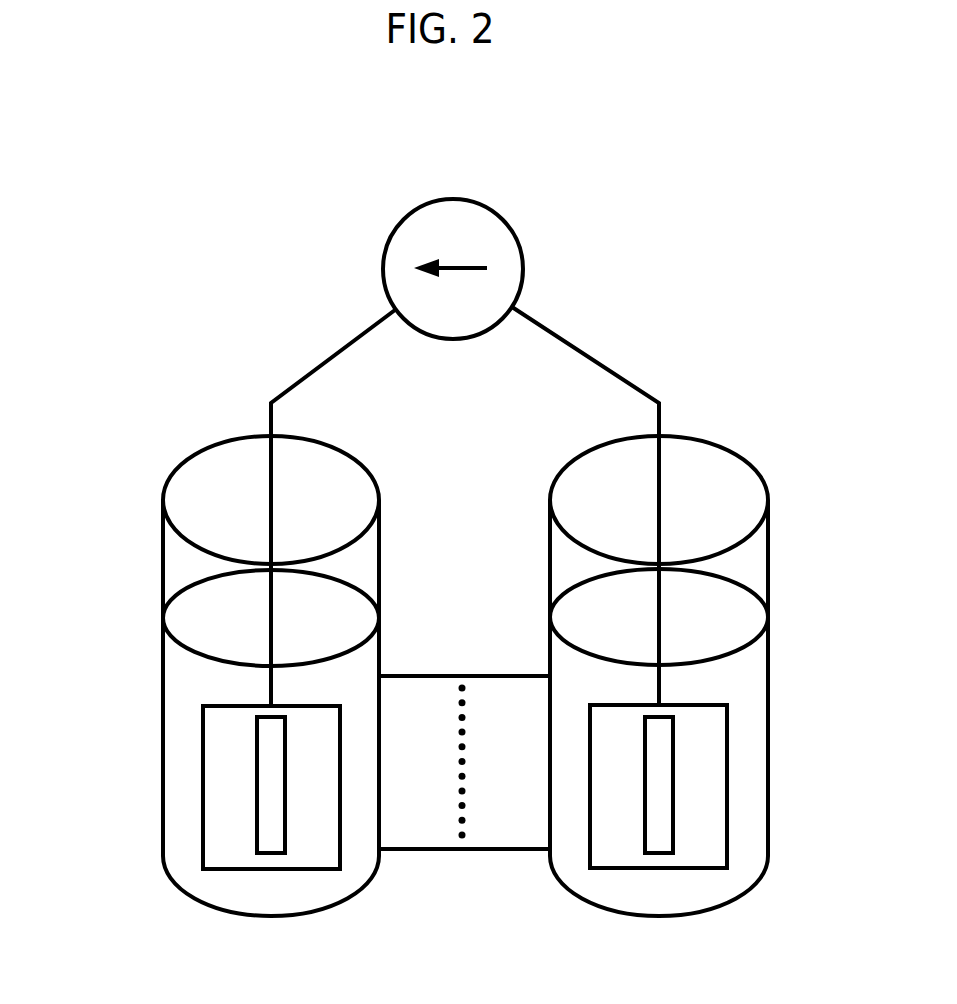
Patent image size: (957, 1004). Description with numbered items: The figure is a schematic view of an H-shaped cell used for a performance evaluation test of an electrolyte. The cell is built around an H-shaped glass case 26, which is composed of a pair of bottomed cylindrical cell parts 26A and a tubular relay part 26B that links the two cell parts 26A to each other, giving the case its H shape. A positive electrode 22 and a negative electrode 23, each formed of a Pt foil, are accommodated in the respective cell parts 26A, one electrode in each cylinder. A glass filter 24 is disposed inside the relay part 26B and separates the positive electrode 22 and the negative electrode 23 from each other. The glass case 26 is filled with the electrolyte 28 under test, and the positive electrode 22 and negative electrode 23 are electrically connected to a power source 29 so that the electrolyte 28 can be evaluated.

The positive electrode 22 is at (202, 747).
The negative electrode 23 is at (728, 743).
The glass filter 24 is at (463, 795).
The H-shaped glass case 26 is at (456, 663).
The cell parts 26A is at (163, 560).
The relay part 26B is at (415, 852).
The electrolyte 28 is at (750, 803).
The power source 29 is at (434, 198).